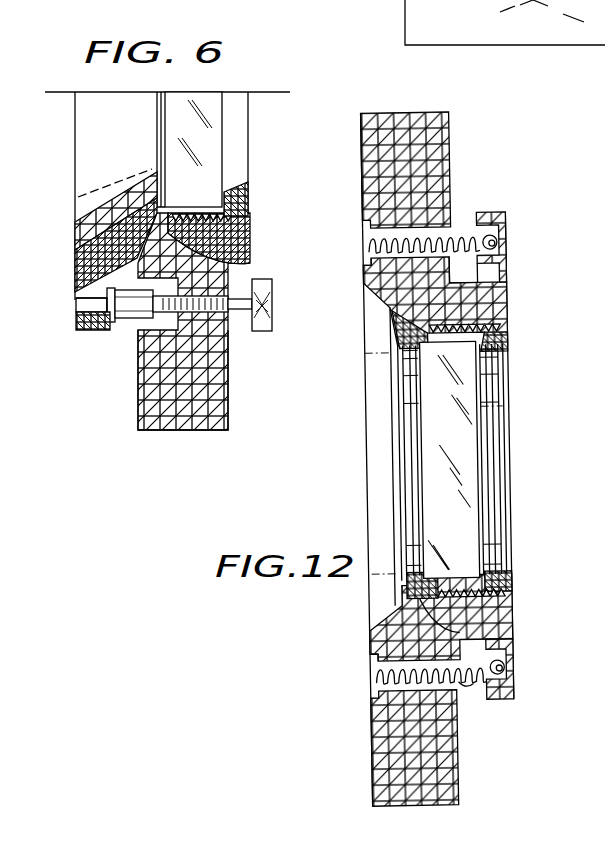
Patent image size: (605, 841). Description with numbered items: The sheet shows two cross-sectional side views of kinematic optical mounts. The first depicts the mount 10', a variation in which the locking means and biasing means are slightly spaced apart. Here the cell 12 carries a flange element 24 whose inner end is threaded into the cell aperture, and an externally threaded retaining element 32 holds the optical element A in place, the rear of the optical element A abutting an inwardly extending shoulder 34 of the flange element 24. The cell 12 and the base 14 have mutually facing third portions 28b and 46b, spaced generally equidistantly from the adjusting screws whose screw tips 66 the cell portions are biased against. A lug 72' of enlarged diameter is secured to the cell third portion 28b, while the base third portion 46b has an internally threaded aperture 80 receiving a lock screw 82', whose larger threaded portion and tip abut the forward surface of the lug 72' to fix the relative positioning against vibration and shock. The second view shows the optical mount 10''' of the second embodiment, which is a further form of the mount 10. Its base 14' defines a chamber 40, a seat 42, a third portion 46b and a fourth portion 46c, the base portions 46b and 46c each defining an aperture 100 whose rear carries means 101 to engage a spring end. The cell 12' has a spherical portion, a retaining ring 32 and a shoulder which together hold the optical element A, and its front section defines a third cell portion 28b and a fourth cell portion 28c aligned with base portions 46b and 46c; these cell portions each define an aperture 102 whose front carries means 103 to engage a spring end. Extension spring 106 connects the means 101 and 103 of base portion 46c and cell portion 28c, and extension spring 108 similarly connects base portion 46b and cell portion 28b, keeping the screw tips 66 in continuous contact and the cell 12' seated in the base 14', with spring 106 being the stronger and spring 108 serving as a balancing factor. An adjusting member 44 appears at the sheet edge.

In FIG. 6, the mount 10' is at (180, 222).
In FIG. 12, the optical mount 10''' is at (430, 446).
In FIG. 12, the lens mounting assembly 10 is at (600, 160).
In FIG. 6, the cell 12 is at (234, 238).
In FIG. 12, the cell 12' is at (462, 458).
In FIG. 6, the base 14 is at (208, 321).
In FIG. 12, the base 14' is at (425, 157).
In FIG. 6, the flange element 24 is at (121, 233).
In FIG. 6, the cell third portion 28b is at (76, 322).
In FIG. 12, the cell third portion 28b is at (510, 698).
In FIG. 12, the cell fourth portion 28c is at (494, 212).
In FIG. 6, the retaining element 32 is at (248, 192).
In FIG. 12, the retaining element 32 is at (509, 333).
In FIG. 12, the shoulder 34 is at (589, 369).
In FIG. 12, the chamber 40 is at (594, 598).
In FIG. 12, the seat 42 is at (505, 22).
In FIG. 12, the adjusting member 44 is at (594, 643).
In FIG. 6, the base third portion 46b is at (138, 412).
In FIG. 12, the base third portion 46b is at (368, 724).
In FIG. 12, the base fourth portion 46c is at (365, 188).
In FIG. 12, the screw tips 66 is at (590, 263).
In FIG. 6, the lug 72' is at (86, 346).
In FIG. 6, the internally threaded aperture 80 is at (210, 304).
In FIG. 6, the lock screw 82' is at (284, 305).
In FIG. 12, the aperture 100 is at (368, 262).
In FIG. 12, the means to engage a spring end 101 is at (372, 249).
In FIG. 12, the aperture 102 is at (506, 236).
In FIG. 12, the means to engage a spring end 103 is at (504, 247).
In FIG. 12, the extension spring 106 is at (458, 230).
In FIG. 12, the extension spring 108 is at (462, 688).
In FIG. 6, the optical element A is at (218, 137).
In FIG. 12, the optical element A is at (482, 461).